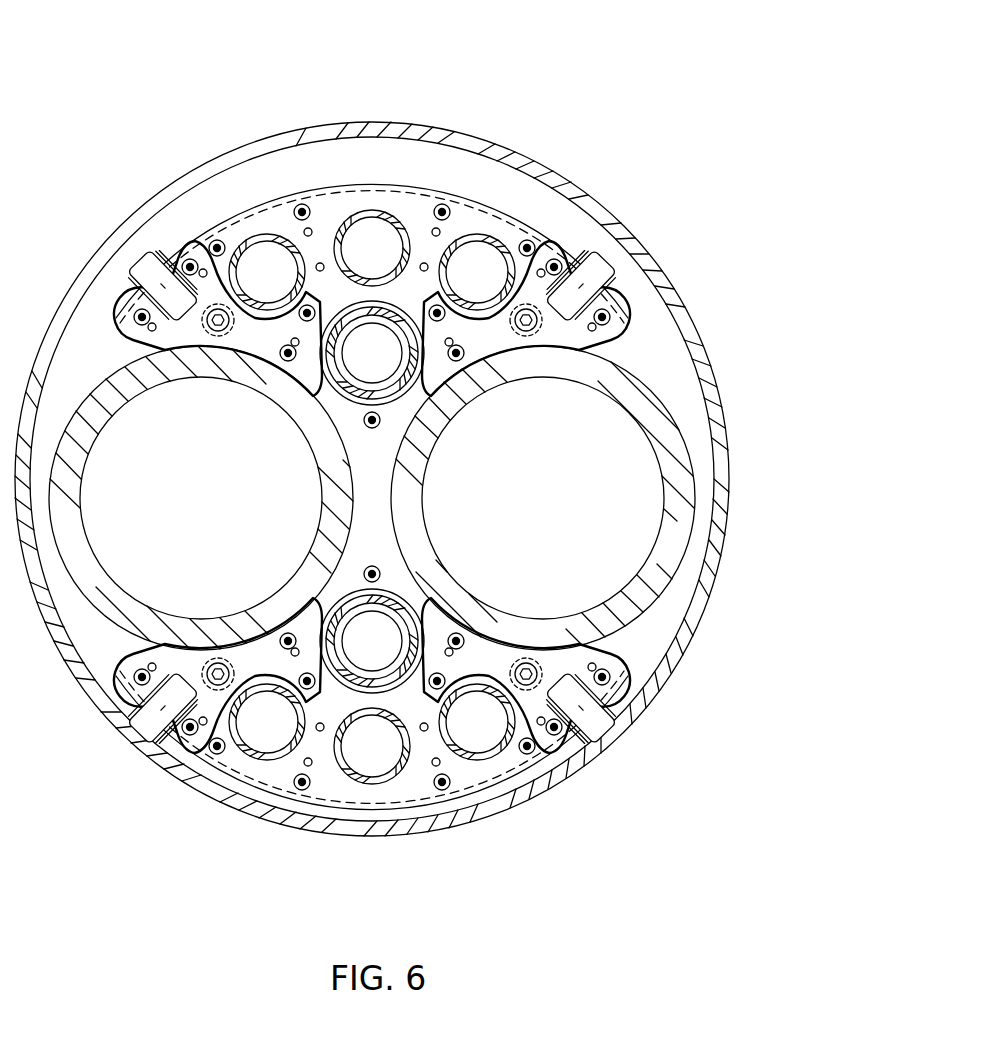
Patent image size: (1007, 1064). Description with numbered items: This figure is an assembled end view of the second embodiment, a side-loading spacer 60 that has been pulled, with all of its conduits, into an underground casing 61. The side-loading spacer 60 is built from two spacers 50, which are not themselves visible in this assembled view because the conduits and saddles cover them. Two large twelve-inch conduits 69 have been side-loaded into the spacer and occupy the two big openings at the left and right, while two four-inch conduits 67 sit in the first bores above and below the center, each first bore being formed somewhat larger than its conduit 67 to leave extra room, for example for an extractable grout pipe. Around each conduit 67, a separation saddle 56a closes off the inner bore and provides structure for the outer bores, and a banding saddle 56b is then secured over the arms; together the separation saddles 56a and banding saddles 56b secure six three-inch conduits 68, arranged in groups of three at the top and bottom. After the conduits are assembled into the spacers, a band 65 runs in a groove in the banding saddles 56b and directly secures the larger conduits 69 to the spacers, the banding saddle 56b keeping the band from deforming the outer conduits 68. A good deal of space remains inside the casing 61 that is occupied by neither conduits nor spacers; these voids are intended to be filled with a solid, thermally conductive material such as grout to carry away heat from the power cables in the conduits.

The spacer 50 is at (762, 442).
The separation saddle 56a is at (420, 263).
The banding saddle 56b is at (327, 207).
The side-loading spacer 60 is at (705, 152).
The underground casing 61 is at (698, 626).
The band 65 is at (622, 352).
The conduit 67 is at (393, 373).
The conduit 68 is at (267, 257).
The conduit 69 is at (222, 519).